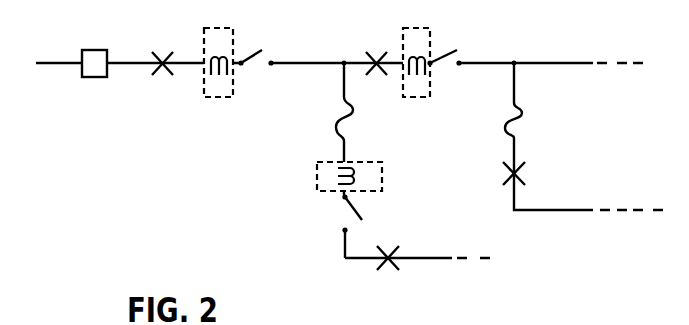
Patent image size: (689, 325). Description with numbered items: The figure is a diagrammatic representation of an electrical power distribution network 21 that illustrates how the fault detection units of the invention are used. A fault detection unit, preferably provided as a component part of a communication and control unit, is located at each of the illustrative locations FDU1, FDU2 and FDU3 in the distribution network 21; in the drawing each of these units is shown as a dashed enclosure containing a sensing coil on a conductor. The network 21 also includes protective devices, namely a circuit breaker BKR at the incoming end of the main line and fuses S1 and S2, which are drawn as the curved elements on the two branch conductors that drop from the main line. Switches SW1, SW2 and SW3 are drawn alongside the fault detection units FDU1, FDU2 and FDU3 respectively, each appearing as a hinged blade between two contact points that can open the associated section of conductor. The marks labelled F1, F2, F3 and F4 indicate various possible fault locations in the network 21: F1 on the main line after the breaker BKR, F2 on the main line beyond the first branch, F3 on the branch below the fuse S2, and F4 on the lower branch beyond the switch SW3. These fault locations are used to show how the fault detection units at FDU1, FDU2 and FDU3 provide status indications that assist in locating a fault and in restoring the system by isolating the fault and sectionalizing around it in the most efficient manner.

The distribution network 21 is at (161, 186).
The circuit breaker BKR is at (100, 48).
The fault location F1 is at (160, 47).
The switch SW1 is at (257, 38).
The fault detection unit location FDU1 is at (223, 99).
The fault location F2 is at (372, 50).
The switch SW2 is at (453, 38).
The fault detection unit location FDU2 is at (424, 97).
The fuse S1 is at (338, 118).
The fuse S2 is at (545, 107).
The fault location F3 is at (530, 166).
The fault detection unit location FDU3 is at (315, 180).
The switch SW3 is at (383, 226).
The fault location F4 is at (417, 274).